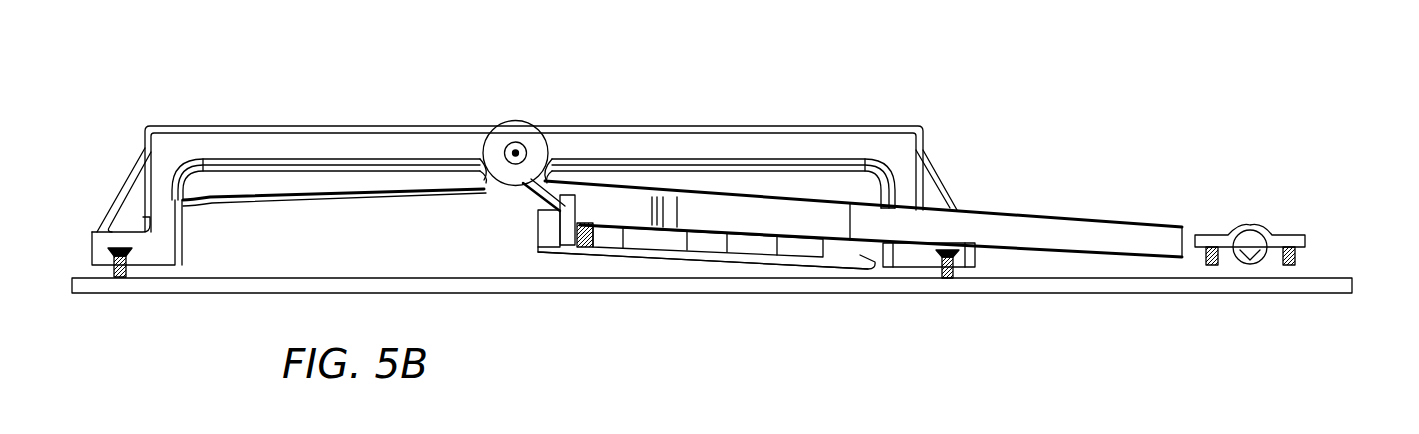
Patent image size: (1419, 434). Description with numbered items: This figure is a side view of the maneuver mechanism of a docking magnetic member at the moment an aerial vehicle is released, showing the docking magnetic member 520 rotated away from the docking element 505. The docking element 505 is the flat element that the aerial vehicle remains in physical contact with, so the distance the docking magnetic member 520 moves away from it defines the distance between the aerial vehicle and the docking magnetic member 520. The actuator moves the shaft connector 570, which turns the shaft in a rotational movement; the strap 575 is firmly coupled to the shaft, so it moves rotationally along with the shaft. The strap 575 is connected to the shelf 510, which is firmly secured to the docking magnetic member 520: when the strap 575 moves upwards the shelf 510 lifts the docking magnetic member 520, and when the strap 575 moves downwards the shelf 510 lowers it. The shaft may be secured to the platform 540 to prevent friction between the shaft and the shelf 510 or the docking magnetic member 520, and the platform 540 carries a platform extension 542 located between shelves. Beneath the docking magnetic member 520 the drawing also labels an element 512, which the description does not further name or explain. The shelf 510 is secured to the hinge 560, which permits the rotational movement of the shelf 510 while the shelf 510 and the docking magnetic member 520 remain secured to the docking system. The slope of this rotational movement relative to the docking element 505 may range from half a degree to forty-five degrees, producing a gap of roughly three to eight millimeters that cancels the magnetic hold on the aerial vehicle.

The docking element 505 is at (688, 286).
The shelf 510 is at (1082, 228).
The fastener 512 is at (946, 280).
The docking magnetic member 520 is at (641, 252).
The platform 540 is at (700, 142).
The platform extension 542 is at (150, 248).
The hinge 560 is at (1250, 266).
The shaft connector 570 is at (517, 130).
The strap 575 is at (536, 200).